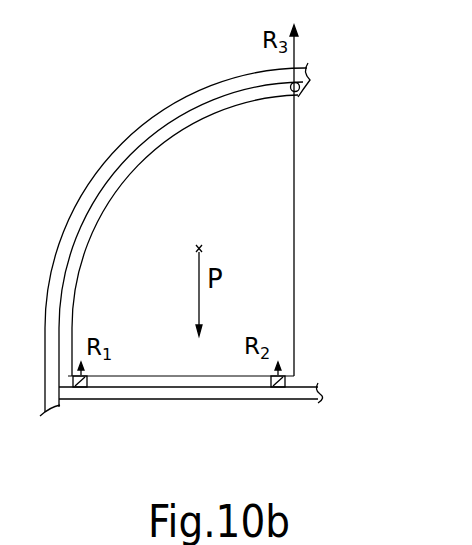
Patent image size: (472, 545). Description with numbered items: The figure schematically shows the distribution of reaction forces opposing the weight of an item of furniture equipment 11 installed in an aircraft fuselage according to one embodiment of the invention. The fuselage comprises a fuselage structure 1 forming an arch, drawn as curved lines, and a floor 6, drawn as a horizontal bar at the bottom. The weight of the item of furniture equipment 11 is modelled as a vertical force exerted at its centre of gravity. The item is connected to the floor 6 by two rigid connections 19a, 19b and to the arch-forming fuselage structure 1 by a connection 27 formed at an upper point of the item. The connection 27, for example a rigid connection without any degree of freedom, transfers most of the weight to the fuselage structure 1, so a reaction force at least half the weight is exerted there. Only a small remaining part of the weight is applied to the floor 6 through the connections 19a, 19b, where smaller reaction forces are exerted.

The fuselage structure 1 is at (190, 96).
The connection 27 is at (299, 84).
The item of furniture equipment 11 is at (277, 216).
The floor 6 is at (197, 400).
The rigid connection 19a is at (78, 388).
The rigid connection 19b is at (278, 399).